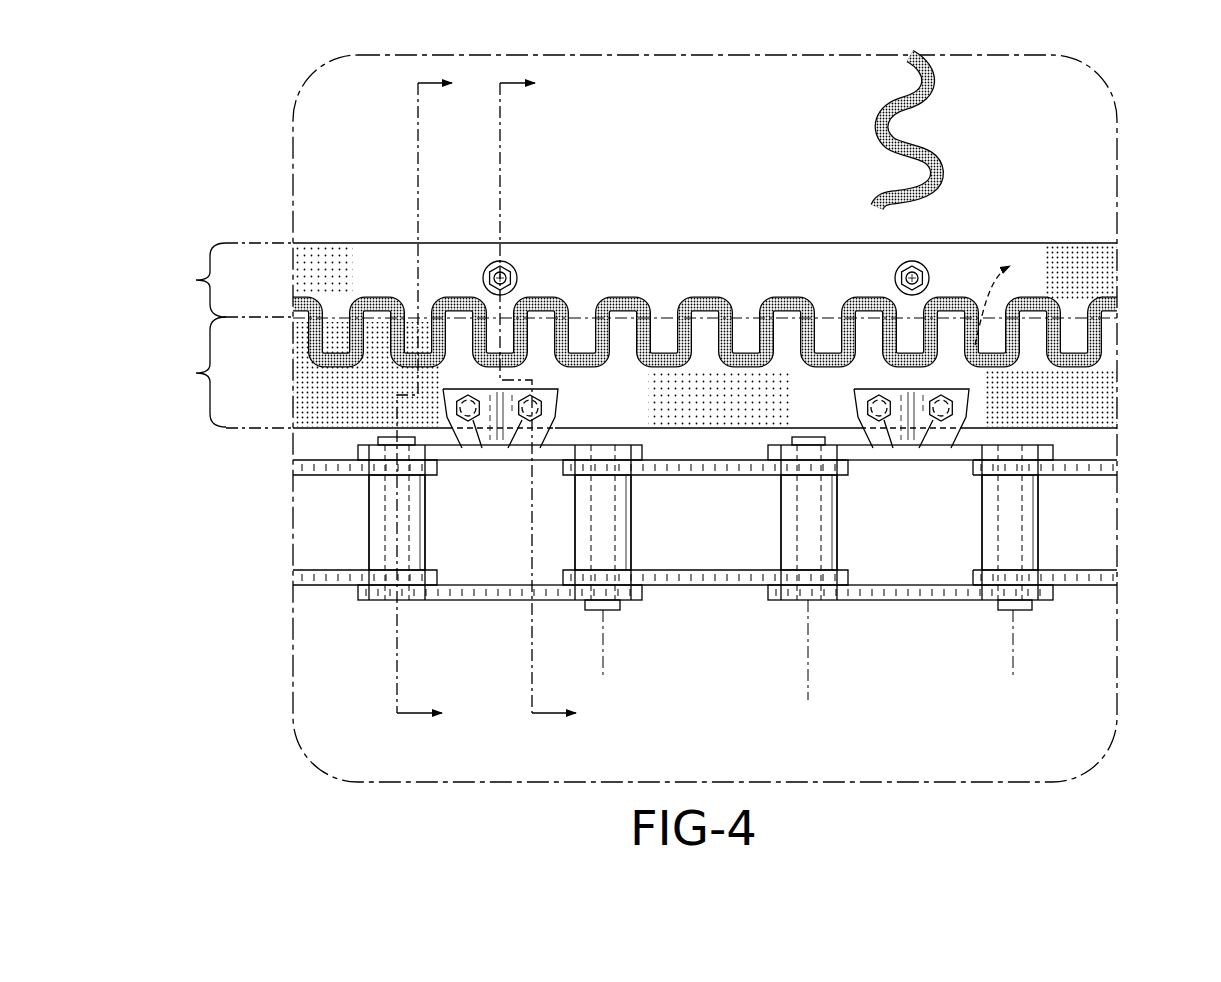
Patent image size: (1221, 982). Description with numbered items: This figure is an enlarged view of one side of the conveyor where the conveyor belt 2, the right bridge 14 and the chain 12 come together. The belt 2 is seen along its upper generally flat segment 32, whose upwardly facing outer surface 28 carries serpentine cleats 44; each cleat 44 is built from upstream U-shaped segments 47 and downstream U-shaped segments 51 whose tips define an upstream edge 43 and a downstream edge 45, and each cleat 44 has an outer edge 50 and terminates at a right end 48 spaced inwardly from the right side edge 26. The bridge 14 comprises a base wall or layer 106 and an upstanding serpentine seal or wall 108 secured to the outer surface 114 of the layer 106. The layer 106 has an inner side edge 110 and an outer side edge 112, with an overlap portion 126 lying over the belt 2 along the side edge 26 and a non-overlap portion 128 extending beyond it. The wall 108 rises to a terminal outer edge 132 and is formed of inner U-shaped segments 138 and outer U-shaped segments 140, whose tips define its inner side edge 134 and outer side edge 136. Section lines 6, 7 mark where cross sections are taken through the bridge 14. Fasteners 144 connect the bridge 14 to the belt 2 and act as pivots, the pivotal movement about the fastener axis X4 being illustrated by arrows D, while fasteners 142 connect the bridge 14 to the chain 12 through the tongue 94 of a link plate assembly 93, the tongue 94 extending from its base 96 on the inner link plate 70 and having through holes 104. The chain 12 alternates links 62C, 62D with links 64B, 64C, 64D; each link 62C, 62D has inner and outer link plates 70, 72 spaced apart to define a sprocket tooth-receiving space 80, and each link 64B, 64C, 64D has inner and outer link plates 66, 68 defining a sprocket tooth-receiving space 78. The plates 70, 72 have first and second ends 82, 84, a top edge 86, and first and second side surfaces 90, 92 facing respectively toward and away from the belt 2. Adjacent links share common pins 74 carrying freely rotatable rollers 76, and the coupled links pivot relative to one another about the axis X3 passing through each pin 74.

The conveyor belt 2 is at (640, 418).
The outer surface 28 is at (640, 418).
The upper generally flat segment 32 is at (350, 118).
The section line 6 is at (438, 398).
The section line 7 is at (549, 398).
The upstream edge 43 is at (901, 144).
The upstream U-shaped segments 47 is at (870, 118).
The downstream edge 45 is at (950, 80).
The downstream U-shaped segments 51 is at (948, 157).
The cleats 44 is at (942, 133).
The outer edge 50 is at (935, 168).
The right end 48 is at (877, 205).
The inner side edge 110 is at (448, 236).
The bridge 14 is at (666, 213).
The fasteners 144 is at (486, 270).
The axis X4 is at (484, 277).
The arrows D is at (522, 249).
The base wall or layer 106 is at (628, 238).
The upstanding seal or wall 108 is at (686, 298).
The inner side edge 134 is at (744, 285).
The inner U-shaped segments 138 is at (1148, 284).
The outer edge 132 is at (563, 330).
The outer side edge 136 is at (662, 375).
The outer U-shaped segments 140 is at (403, 365).
The holes 104 is at (1020, 300).
The outer surface 114 is at (392, 283).
The overlap portion 126 is at (221, 280).
The non-overlap portion 128 is at (219, 372).
The right side edge 26 is at (310, 343).
The outer side edge 112 is at (317, 432).
The fasteners 142 is at (525, 430).
The link plate assembly 93 is at (976, 397).
The tongue 94 is at (860, 398).
The base 96 is at (910, 455).
The inner link plate 70 is at (865, 466).
The chain 12 is at (377, 607).
The chain link 64B is at (328, 592).
The chain link 64C is at (683, 601).
The chain link 64D is at (1085, 600).
The outer link plate 68 is at (642, 590).
The chain link 62C is at (458, 604).
The chain link 62D is at (865, 601).
The outer link plate 72 is at (705, 567).
The inner link plate 66 is at (320, 478).
The rollers 76 is at (428, 548).
The pins 74 is at (392, 546).
The sprocket tooth-receiving space 78 is at (318, 500).
The sprocket tooth-receiving space 80 is at (493, 570).
The first end 82 is at (768, 452).
The second end 84 is at (1053, 452).
The top edge 86 is at (1035, 447).
The first side surface 90 is at (1020, 445).
The second side surface 92 is at (958, 462).
The axis X3 is at (1013, 666).